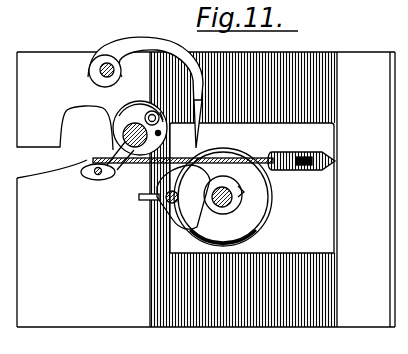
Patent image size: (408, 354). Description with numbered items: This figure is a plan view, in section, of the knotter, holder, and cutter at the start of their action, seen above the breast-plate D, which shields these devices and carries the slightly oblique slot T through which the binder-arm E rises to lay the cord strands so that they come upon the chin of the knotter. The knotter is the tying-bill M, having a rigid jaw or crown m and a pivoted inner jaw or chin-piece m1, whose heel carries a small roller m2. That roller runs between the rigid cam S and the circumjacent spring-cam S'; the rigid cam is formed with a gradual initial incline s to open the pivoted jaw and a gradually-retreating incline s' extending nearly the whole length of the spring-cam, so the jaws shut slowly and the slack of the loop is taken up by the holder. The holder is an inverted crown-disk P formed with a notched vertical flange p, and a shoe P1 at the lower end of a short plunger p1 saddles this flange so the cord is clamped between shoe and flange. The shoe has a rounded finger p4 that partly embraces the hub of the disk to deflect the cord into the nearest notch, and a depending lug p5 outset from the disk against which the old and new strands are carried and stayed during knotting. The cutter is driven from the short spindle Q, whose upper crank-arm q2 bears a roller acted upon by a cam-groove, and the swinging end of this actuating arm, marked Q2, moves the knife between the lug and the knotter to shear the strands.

The breast-plate D is at (206, 189).
The slot in the breast-plate T is at (65, 109).
The second crank-arm q2 is at (145, 59).
The spring arm end Q2 is at (203, 133).
The short spindle Q is at (99, 71).
The spring-cam S' is at (140, 120).
The rigid cam S is at (127, 128).
The gradually-retreating incline s' is at (146, 114).
The gradual initial incline s is at (134, 138).
The small roller m2 is at (160, 113).
The tying-bill M is at (112, 154).
The pivoted inner jaw or chin-piece m1 is at (100, 178).
The rigid jaw or crown m is at (142, 164).
The depending lug p5 is at (140, 198).
The shoe P1 is at (183, 197).
The short shank or plunger p1 is at (167, 204).
The vertical flange p is at (265, 234).
The inverted crown-disk P is at (223, 207).
The rounded finger p4 is at (249, 189).
The binder-arm E is at (301, 174).